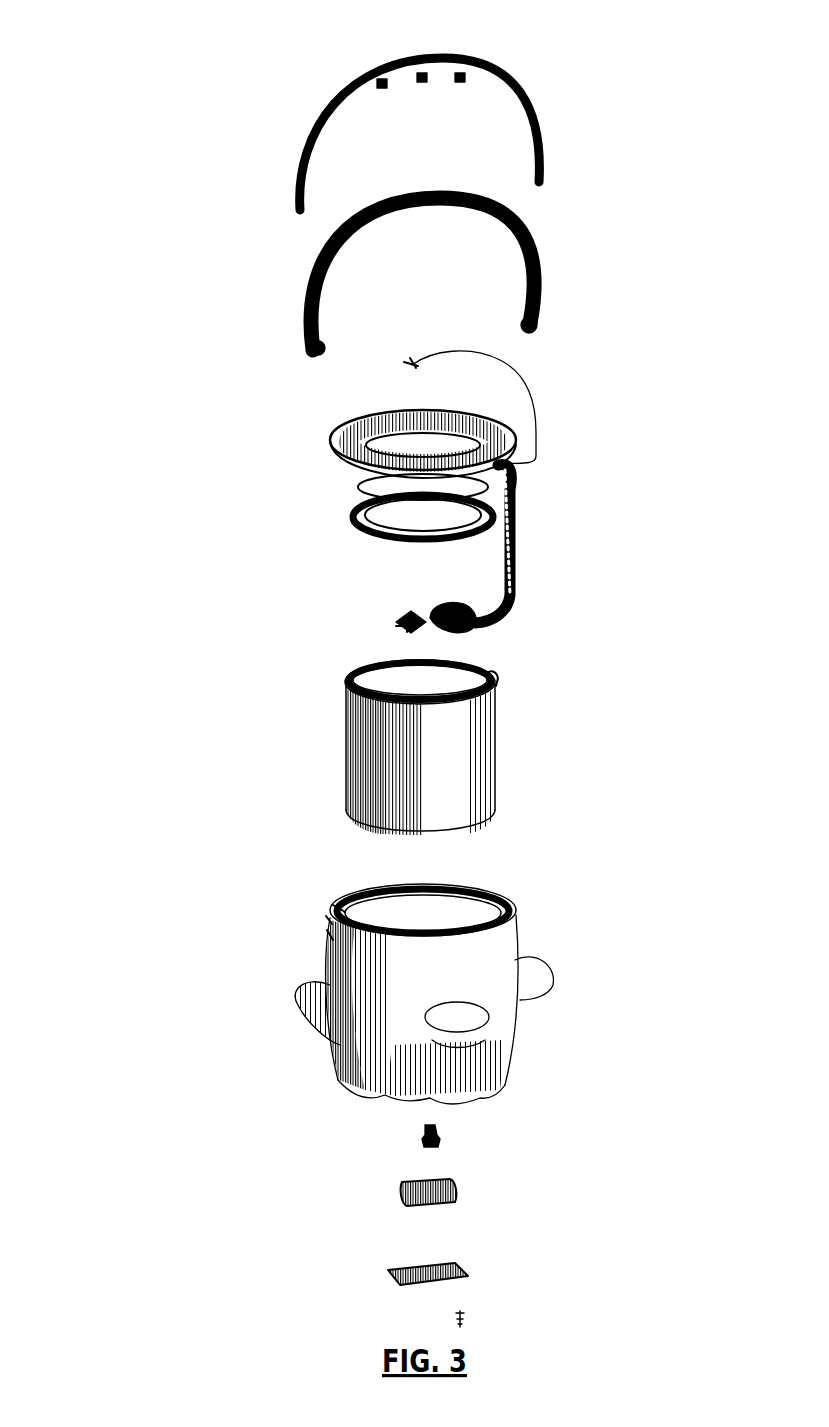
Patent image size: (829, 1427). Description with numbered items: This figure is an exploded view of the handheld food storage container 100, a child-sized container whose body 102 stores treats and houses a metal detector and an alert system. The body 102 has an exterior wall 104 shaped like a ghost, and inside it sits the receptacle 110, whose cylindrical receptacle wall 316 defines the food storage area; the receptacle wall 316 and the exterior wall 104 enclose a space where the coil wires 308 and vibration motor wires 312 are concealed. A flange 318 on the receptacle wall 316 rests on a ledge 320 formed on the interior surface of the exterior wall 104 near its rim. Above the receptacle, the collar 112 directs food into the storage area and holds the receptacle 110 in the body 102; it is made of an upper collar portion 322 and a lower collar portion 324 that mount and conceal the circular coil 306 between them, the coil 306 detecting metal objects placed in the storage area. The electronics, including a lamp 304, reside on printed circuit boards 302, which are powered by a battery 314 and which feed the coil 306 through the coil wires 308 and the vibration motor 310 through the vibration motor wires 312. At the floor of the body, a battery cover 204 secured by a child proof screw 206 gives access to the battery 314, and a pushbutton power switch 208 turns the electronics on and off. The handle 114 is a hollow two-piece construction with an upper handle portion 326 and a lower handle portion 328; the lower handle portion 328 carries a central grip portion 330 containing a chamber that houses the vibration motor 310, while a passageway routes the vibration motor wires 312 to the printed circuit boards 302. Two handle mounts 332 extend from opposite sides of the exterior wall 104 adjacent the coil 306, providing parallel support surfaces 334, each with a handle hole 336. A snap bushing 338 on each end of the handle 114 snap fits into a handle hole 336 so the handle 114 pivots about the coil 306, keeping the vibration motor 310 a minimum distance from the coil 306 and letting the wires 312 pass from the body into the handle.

The container 100 is at (668, 45).
The body 102 is at (136, 968).
The exterior wall 104 is at (505, 1023).
The receptacle 110 is at (135, 710).
The collar 112 is at (142, 451).
The handle 114 is at (133, 183).
The battery cover 204 is at (418, 1266).
The screw 206 is at (465, 1320).
The power switch 208 is at (420, 1144).
The printed circuit boards 302 is at (440, 613).
The lamp 304 is at (405, 628).
The coil 306 is at (358, 482).
The coil wires 308 is at (520, 534).
The vibration motor 310 is at (417, 363).
The vibration motor wires 312 is at (547, 412).
The battery 314 is at (455, 1193).
The receptacle wall 316 is at (360, 762).
The flange 318 is at (498, 686).
The ledge 320 is at (448, 897).
The upper collar portion 322 is at (332, 440).
The lower collar portion 324 is at (372, 528).
The upper handle portion 326 is at (548, 165).
The lower handle portion 328 is at (543, 268).
The grip portion 330 is at (446, 262).
The handle mounts 332 is at (338, 915).
The support surfaces 334 is at (328, 921).
The handle hole 336 is at (328, 937).
The snap bushing 338 is at (543, 322).